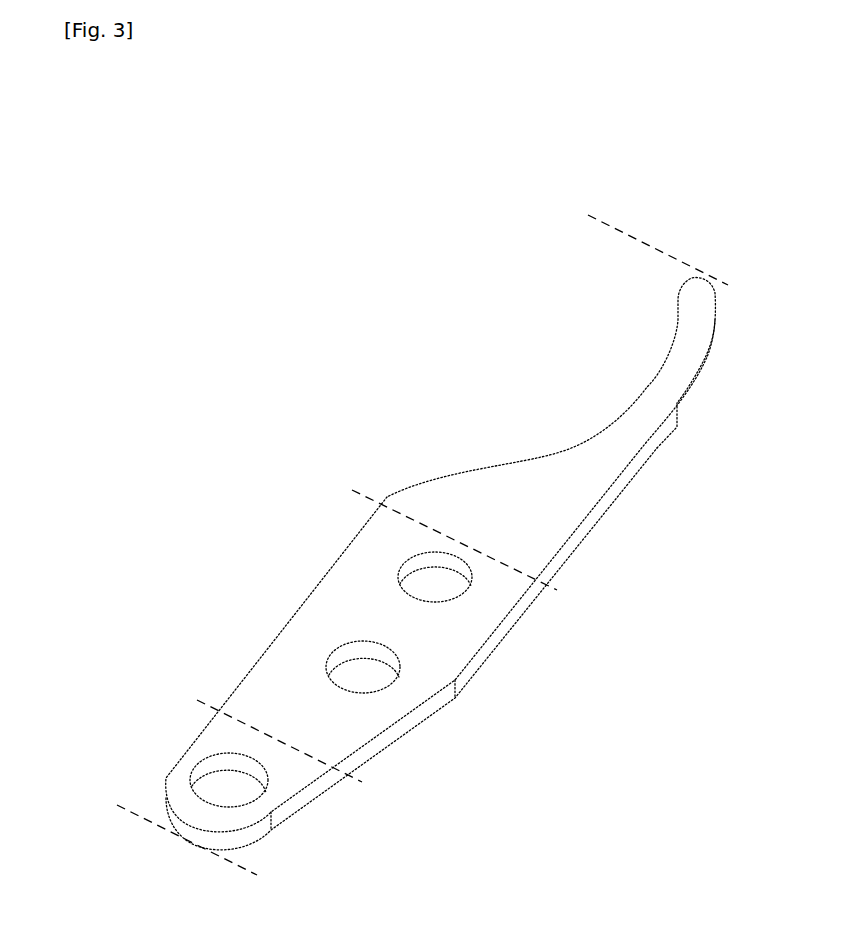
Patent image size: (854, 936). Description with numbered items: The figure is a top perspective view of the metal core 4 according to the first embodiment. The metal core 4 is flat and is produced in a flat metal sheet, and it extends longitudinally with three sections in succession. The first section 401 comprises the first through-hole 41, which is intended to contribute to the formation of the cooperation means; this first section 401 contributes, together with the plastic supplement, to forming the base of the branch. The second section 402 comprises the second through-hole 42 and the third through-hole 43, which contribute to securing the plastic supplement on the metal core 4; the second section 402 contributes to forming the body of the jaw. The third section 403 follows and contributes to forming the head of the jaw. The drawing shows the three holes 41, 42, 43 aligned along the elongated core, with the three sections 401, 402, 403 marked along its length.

The metal core 4 is at (234, 458).
The first through-hole 41 is at (262, 794).
The second through-hole 42 is at (367, 693).
The third through-hole 43 is at (465, 597).
The first section 401 is at (200, 715).
The second section 402 is at (370, 513).
The third section 403 is at (600, 235).